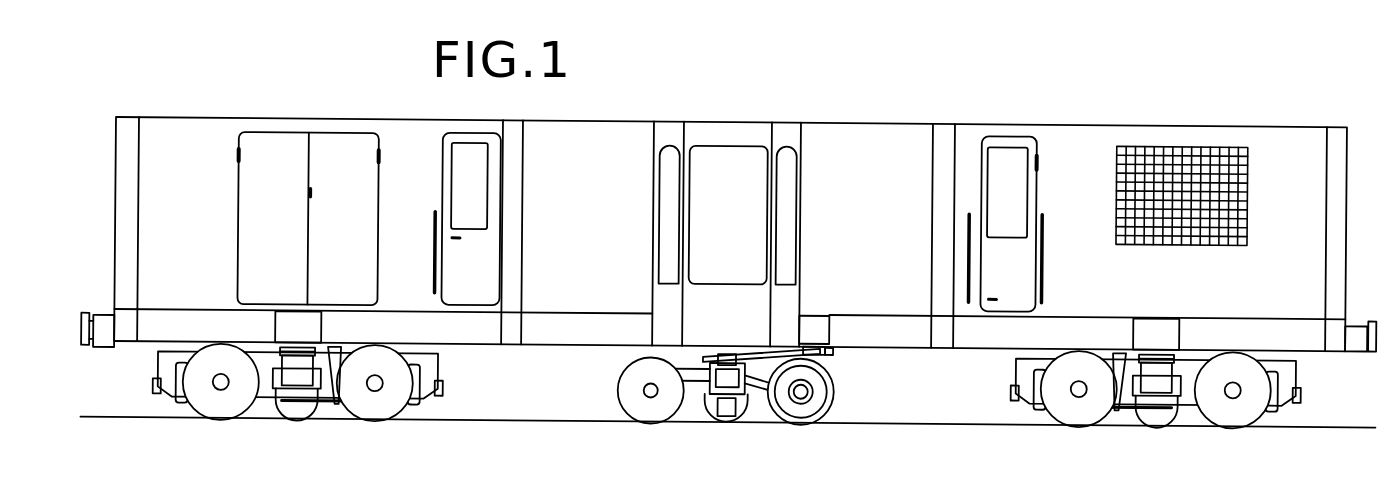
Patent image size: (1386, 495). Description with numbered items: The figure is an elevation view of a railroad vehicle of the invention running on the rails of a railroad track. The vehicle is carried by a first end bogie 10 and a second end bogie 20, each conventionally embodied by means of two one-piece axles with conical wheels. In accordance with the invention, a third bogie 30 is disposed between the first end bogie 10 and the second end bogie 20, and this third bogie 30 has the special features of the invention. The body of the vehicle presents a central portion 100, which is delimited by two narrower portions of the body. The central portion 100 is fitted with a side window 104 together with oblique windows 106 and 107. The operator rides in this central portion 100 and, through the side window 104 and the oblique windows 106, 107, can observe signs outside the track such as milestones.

The central portion 100 is at (716, 106).
The side window 104 is at (741, 161).
The oblique window 106 is at (670, 214).
The oblique window 107 is at (787, 228).
The first end bogie 10 is at (413, 425).
The second end bogie 20 is at (1270, 425).
The third bogie 30 is at (837, 425).